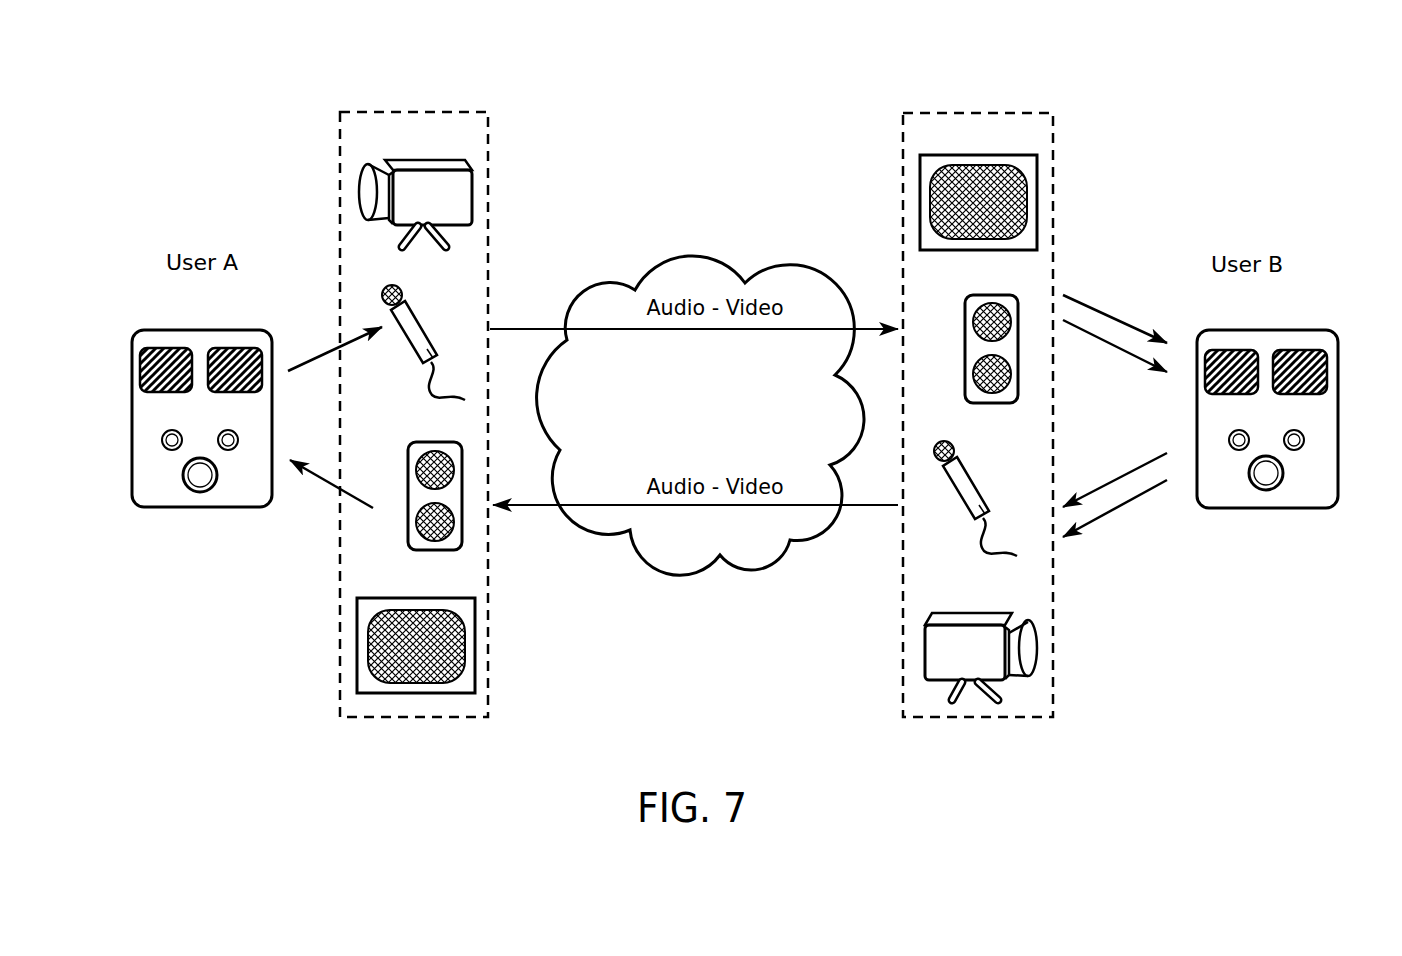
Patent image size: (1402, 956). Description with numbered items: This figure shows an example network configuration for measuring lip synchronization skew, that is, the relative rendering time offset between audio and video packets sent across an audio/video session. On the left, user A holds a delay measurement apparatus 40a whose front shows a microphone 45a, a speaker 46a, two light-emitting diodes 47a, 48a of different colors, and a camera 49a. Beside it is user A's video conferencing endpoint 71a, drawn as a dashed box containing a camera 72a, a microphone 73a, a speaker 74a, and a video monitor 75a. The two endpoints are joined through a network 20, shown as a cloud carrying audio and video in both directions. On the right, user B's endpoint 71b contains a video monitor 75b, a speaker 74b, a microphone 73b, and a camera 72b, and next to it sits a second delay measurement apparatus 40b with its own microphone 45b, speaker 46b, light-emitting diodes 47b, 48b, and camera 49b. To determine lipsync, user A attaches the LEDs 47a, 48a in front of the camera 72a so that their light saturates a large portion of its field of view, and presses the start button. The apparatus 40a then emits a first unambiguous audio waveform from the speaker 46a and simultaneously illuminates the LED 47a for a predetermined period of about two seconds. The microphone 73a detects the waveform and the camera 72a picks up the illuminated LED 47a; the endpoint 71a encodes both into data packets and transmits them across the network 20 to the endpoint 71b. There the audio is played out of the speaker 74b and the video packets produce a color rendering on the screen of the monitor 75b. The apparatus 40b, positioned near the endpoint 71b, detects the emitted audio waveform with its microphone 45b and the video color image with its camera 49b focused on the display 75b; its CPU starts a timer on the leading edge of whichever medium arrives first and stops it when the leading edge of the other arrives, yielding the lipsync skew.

The network 20 is at (703, 431).
The delay measurement apparatus 40a is at (166, 328).
The delay measurement apparatus 40b is at (1276, 328).
The microphone 45a is at (140, 372).
The microphone 45b is at (1236, 356).
The speaker 46a is at (232, 356).
The speaker 46b is at (1327, 374).
The light-emitting diode 47a is at (162, 440).
The light-emitting diode 47b is at (1229, 440).
The light-emitting diode 48a is at (238, 440).
The light-emitting diode 48b is at (1304, 440).
The camera 49a is at (201, 478).
The camera 49b is at (1267, 476).
The video conferencing endpoint 71a is at (410, 110).
The video conferencing endpoint 71b is at (972, 111).
The camera 72a is at (428, 160).
The camera 72b is at (960, 612).
The microphone 73a is at (425, 328).
The microphone 73b is at (977, 487).
The speaker 74a is at (408, 458).
The speaker 74b is at (965, 315).
The video monitor 75a is at (378, 598).
The video monitor 75b is at (965, 155).